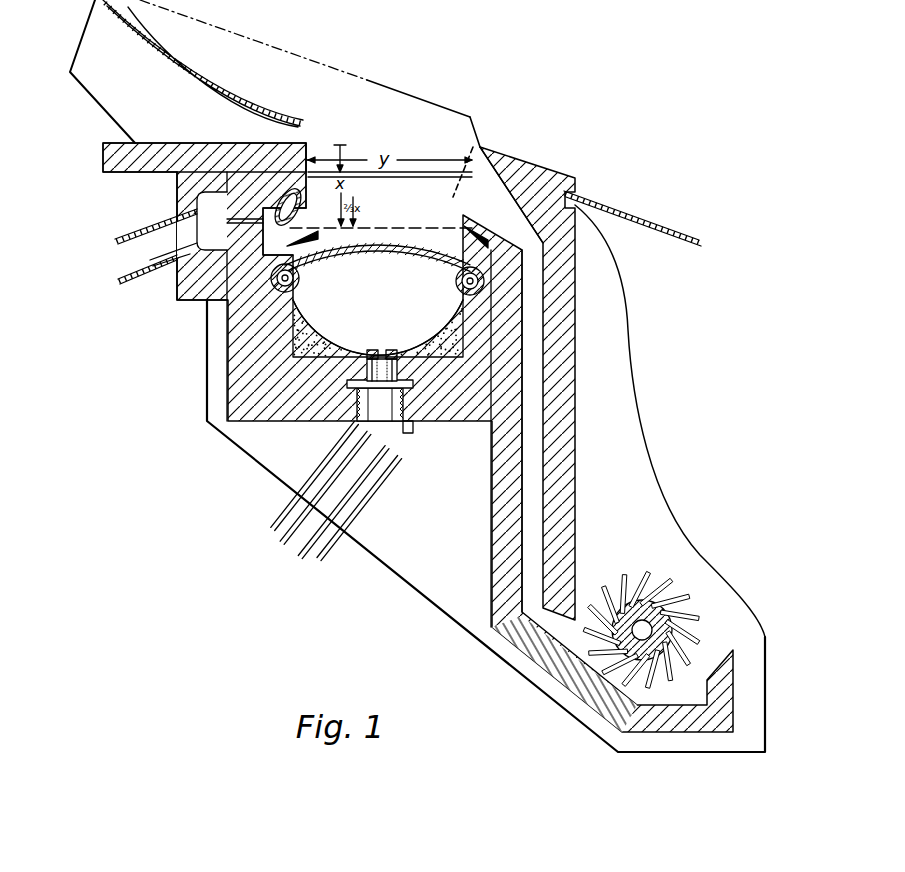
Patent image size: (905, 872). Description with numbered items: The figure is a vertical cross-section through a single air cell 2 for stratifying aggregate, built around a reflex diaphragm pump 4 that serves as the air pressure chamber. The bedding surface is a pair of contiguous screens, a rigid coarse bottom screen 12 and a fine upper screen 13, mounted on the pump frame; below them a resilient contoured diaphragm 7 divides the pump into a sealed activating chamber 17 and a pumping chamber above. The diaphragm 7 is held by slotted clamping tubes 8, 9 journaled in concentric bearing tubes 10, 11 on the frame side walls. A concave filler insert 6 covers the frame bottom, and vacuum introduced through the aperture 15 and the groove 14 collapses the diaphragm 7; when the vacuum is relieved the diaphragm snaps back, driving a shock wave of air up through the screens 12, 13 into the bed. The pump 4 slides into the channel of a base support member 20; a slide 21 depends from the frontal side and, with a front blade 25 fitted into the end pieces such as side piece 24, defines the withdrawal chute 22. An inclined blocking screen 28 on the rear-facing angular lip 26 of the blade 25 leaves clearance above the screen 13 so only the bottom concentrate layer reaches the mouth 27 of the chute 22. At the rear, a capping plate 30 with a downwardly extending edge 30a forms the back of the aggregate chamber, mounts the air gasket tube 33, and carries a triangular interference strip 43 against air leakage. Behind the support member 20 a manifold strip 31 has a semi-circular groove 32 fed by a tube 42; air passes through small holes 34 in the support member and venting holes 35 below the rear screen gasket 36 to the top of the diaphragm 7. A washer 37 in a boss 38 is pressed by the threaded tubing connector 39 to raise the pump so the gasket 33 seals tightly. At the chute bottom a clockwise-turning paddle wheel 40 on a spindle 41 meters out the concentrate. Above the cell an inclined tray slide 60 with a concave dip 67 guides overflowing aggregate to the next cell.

The housing 2 is at (366, 613).
The diaphragm pump 4 is at (465, 346).
The concave filler insert 6 is at (311, 352).
The resilient diaphragm 7 is at (427, 258).
The slotted clamping tube 8 is at (300, 281).
The slotted clamping tube 9 is at (461, 283).
The concentric bearing tube 10 is at (298, 291).
The concentric bearing tube 11 is at (462, 291).
The bottom screen 12 is at (358, 185).
The upper screen 13 is at (385, 227).
The groove 14 is at (374, 366).
The aperture 15 is at (383, 372).
The activating chamber 17 is at (381, 305).
The base support member 20 is at (483, 415).
The slide 21 is at (493, 568).
The withdrawal chute 22 is at (530, 406).
The side piece 24 is at (388, 106).
The front blade 25 is at (577, 271).
The angular lip 26 is at (480, 147).
The mouth 27 is at (486, 206).
The inclined blocking screen 28 is at (472, 147).
The capping plate 30 is at (163, 147).
The downwardly extending edge 30a is at (313, 157).
The manifold strip 31 is at (176, 290).
The longitudinal groove 32 is at (212, 214).
The air gasket tube 33 is at (306, 216).
The small holes 34 is at (202, 225).
The venting holes 35 is at (314, 239).
The rear screen gasket 36 is at (292, 228).
The washer 37 is at (357, 406).
The boss 38 is at (413, 384).
The threaded tubing connector 39 is at (405, 432).
The paddle wheel 40 is at (648, 583).
The spindle 41 is at (615, 578).
The tube 42 is at (177, 226).
The interference strip 43 is at (308, 179).
The slide 60 is at (648, 225).
The concave dip 67 is at (236, 76).